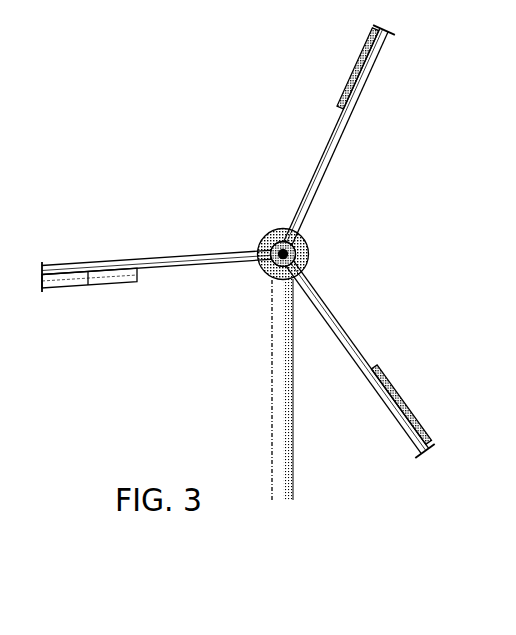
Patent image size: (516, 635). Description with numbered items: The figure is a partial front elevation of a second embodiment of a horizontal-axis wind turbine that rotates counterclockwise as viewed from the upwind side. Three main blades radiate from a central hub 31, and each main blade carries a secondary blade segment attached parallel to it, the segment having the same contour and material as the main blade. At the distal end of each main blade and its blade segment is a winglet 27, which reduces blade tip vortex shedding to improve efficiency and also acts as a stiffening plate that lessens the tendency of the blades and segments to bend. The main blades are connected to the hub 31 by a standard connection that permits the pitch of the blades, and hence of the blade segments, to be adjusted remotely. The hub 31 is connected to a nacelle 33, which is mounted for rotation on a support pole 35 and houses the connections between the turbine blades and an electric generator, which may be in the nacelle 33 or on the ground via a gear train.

The winglet 27 is at (428, 451).
The hub 31 is at (282, 240).
The nacelle 33 is at (312, 242).
The support pole 35 is at (272, 372).